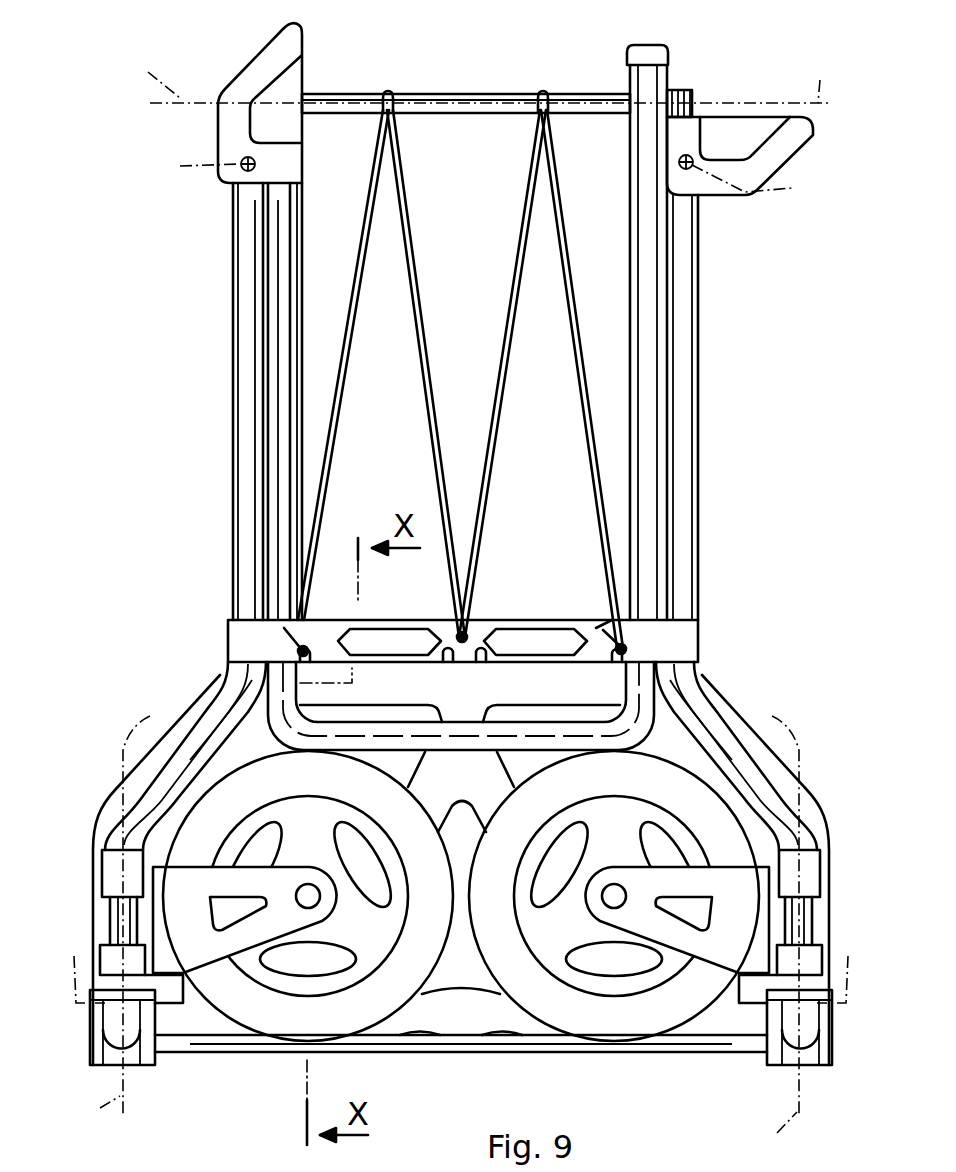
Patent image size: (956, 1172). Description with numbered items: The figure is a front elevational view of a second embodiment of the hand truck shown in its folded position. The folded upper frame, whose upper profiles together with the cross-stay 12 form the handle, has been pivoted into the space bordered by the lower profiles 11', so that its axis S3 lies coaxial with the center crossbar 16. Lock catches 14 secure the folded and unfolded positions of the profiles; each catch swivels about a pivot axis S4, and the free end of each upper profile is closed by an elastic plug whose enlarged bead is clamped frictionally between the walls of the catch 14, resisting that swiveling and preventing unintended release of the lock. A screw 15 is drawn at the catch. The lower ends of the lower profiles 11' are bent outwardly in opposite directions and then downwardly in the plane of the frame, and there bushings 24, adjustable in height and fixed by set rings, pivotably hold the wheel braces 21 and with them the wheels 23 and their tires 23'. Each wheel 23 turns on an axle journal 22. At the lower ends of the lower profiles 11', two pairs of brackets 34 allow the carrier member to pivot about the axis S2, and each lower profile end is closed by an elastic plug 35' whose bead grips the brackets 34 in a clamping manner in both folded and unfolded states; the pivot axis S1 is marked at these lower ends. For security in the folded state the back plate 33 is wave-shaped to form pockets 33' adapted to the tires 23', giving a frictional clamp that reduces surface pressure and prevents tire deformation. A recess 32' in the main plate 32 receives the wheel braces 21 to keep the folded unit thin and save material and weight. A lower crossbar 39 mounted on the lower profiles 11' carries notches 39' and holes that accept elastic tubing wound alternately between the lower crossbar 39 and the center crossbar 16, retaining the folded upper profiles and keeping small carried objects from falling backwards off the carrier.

The lower profiles 11' is at (462, 401).
The cross-stay 12 is at (596, 726).
The lock catch 14 is at (489, 109).
The screw 15 is at (243, 160).
The center crossbar 16 is at (495, 94).
The wheel brace 21 is at (193, 925).
The axle journal 22 is at (314, 888).
The wheel 23 is at (461, 896).
The tire 23' is at (461, 896).
The bushing 24 is at (113, 910).
The main plate 32 is at (460, 853).
The recess 32' is at (461, 720).
The back plate 33 is at (461, 1073).
The pocket 33' is at (464, 1072).
The bracket 34 is at (118, 1022).
The elastic plug 35' is at (461, 1070).
The lower crossbar 39 is at (463, 606).
The notch 39' is at (375, 612).
The axis S1 is at (434, 919).
The pivot axis S2 is at (463, 963).
The folding axis S3 is at (475, 76).
The catch pivot axis S4 is at (487, 178).